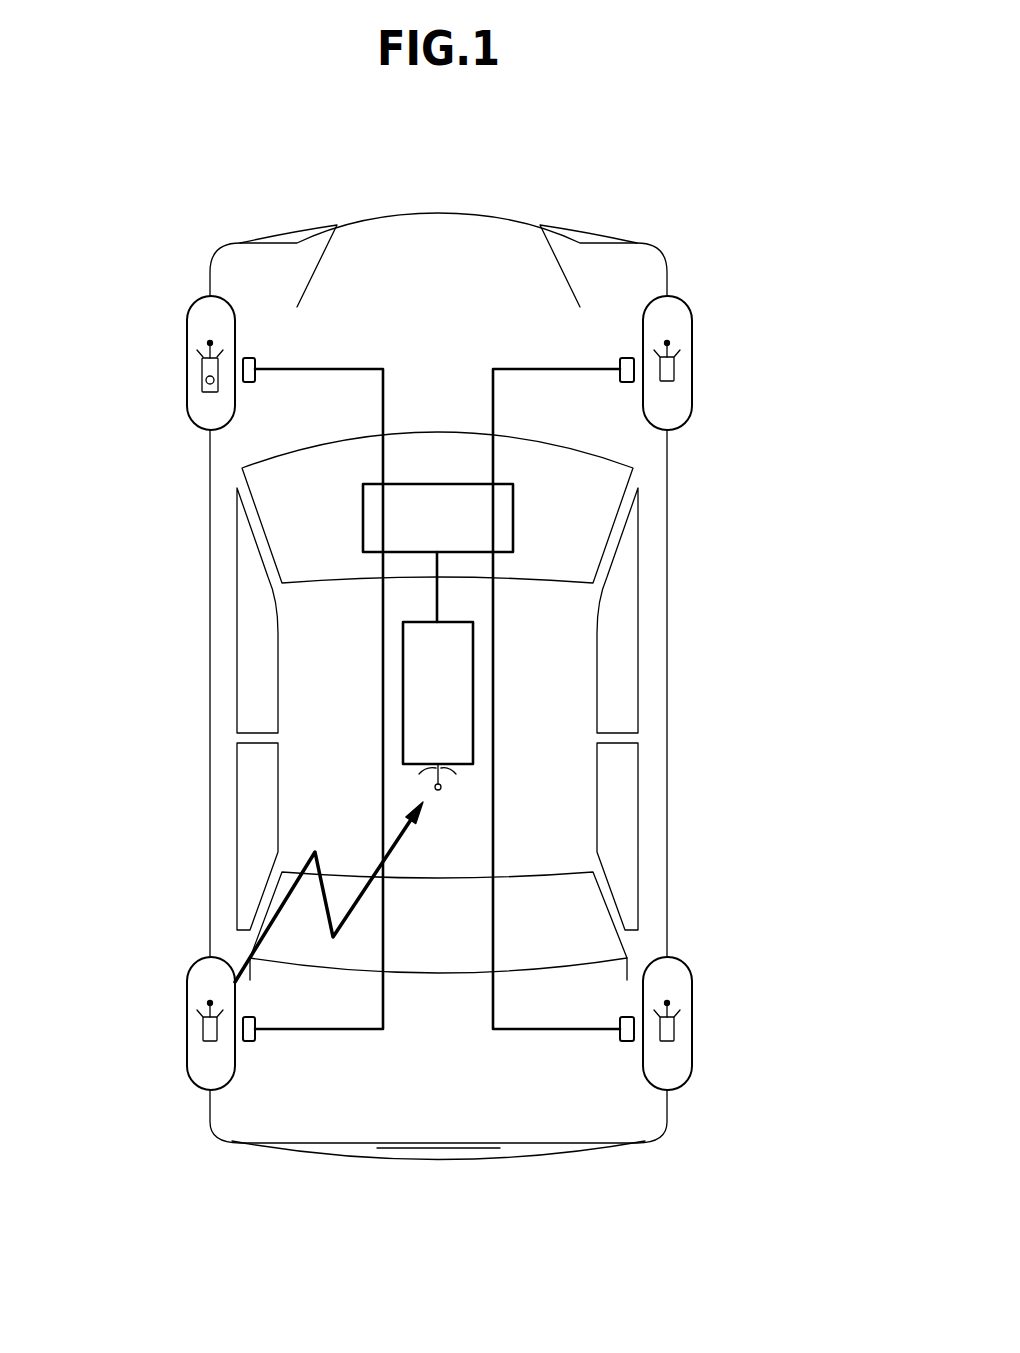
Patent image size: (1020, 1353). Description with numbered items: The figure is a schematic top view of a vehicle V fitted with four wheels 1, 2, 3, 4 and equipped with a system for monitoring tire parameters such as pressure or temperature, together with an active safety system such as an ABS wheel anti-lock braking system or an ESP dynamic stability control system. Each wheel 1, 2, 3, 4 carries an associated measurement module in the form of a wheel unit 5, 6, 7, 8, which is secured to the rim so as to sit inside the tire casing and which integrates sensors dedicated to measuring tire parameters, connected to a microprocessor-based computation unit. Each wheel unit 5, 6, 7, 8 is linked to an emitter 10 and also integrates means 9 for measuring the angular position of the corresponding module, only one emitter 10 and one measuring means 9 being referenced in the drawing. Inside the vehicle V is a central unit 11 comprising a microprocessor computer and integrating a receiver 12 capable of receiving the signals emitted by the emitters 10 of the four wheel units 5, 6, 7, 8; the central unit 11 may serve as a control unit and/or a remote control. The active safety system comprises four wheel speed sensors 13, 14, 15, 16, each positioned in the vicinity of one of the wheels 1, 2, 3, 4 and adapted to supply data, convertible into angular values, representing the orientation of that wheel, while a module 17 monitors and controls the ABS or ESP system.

The wheel 1 is at (190, 358).
The wheel 2 is at (685, 357).
The wheel 3 is at (192, 1012).
The wheel 4 is at (685, 1017).
The wheel unit 5 is at (202, 387).
The wheel unit 6 is at (673, 379).
The wheel unit 7 is at (203, 1040).
The wheel unit 8 is at (672, 1040).
The means for measuring angular position 9 is at (210, 384).
The emitter 10 is at (207, 343).
The central unit 11 is at (415, 735).
The receiver 12 is at (435, 789).
The wheel speed sensor 13 is at (251, 357).
The wheel speed sensor 14 is at (627, 357).
The wheel speed sensor 15 is at (253, 1041).
The wheel speed sensor 16 is at (624, 1041).
The monitoring/controlling module 17 is at (460, 524).
The vehicle V is at (650, 618).